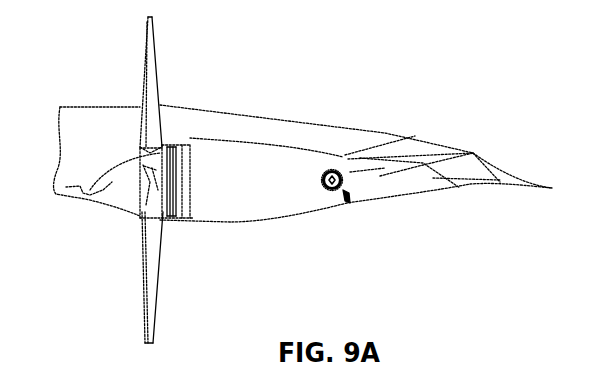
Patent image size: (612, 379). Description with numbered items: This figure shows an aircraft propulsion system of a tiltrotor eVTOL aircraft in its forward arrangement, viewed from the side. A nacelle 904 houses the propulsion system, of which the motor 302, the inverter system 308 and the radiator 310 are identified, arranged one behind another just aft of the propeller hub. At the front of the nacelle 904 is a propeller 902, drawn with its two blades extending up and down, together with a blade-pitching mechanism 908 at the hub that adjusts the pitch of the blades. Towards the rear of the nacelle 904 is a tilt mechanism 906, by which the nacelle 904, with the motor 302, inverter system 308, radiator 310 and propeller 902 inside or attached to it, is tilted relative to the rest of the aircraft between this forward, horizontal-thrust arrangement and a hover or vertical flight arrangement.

The propeller 902 is at (147, 63).
The motor 302 is at (170, 150).
The radiator 310 is at (190, 158).
The nacelle 904 is at (250, 147).
The tilt mechanism 906 is at (348, 202).
The blade-pitching mechanism 908 is at (146, 193).
The inverter system 308 is at (173, 222).